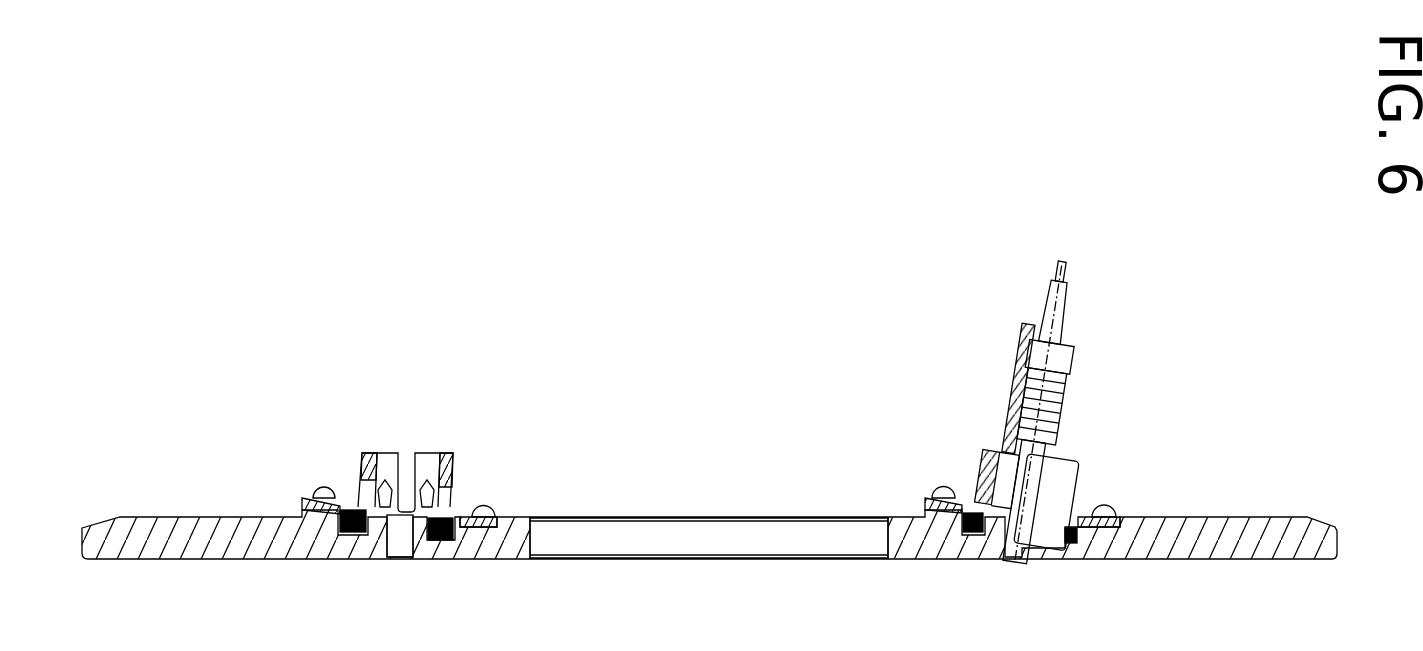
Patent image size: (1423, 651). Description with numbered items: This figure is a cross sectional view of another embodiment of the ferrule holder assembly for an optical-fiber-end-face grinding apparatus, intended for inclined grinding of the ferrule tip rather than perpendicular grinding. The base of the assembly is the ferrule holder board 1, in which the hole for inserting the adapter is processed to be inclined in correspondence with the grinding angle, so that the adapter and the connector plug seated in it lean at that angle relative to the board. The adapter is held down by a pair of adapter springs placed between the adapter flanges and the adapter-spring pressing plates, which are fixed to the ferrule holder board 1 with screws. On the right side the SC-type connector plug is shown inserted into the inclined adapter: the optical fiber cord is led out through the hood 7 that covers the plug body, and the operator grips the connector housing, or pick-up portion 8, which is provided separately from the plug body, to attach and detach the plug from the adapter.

The ferrule holder board 1 is at (1203, 547).
The hood 7 is at (1042, 312).
The connector housing (pick-up portion) 8 is at (1058, 378).